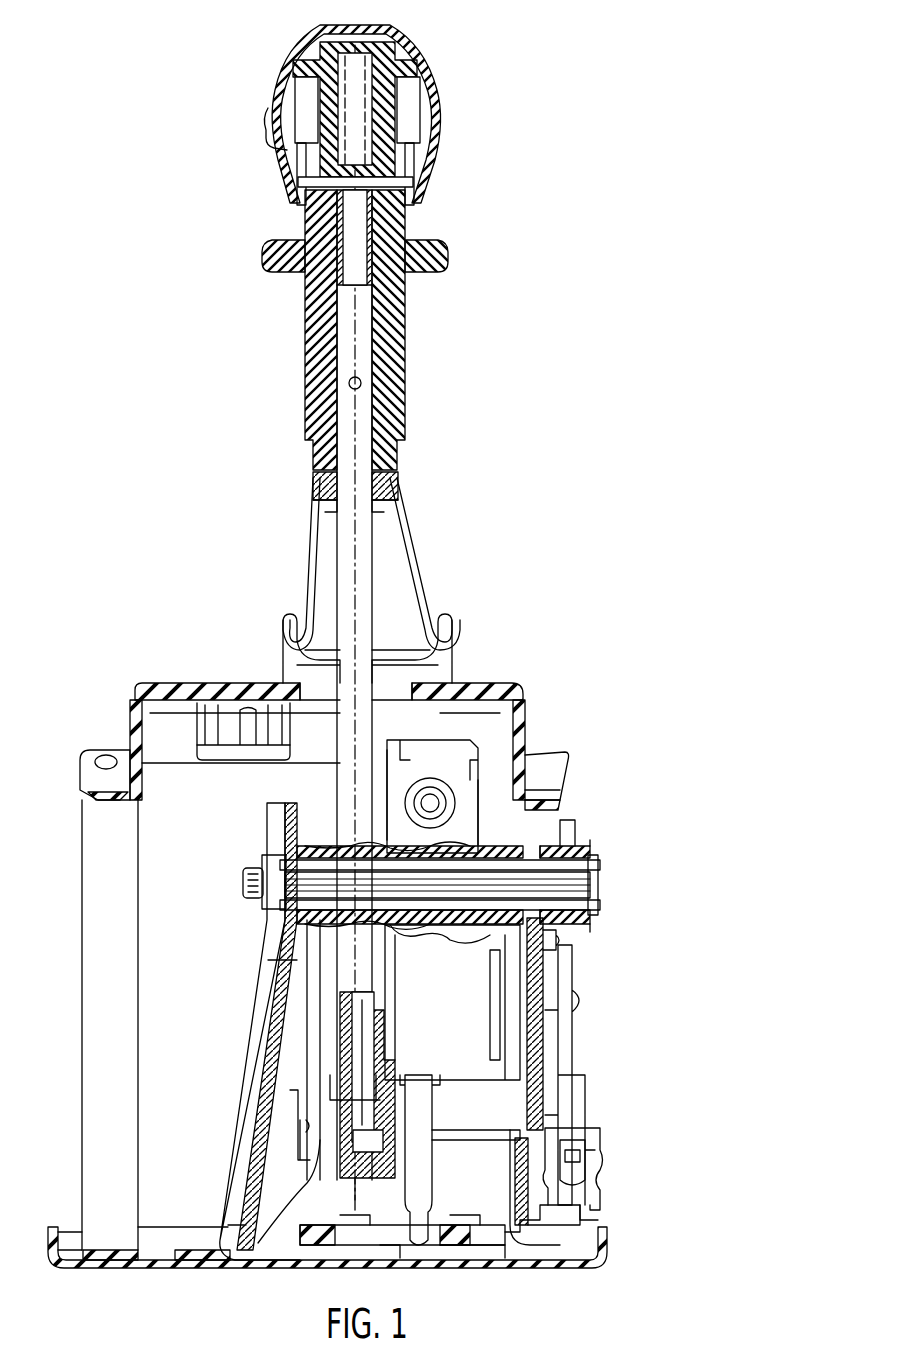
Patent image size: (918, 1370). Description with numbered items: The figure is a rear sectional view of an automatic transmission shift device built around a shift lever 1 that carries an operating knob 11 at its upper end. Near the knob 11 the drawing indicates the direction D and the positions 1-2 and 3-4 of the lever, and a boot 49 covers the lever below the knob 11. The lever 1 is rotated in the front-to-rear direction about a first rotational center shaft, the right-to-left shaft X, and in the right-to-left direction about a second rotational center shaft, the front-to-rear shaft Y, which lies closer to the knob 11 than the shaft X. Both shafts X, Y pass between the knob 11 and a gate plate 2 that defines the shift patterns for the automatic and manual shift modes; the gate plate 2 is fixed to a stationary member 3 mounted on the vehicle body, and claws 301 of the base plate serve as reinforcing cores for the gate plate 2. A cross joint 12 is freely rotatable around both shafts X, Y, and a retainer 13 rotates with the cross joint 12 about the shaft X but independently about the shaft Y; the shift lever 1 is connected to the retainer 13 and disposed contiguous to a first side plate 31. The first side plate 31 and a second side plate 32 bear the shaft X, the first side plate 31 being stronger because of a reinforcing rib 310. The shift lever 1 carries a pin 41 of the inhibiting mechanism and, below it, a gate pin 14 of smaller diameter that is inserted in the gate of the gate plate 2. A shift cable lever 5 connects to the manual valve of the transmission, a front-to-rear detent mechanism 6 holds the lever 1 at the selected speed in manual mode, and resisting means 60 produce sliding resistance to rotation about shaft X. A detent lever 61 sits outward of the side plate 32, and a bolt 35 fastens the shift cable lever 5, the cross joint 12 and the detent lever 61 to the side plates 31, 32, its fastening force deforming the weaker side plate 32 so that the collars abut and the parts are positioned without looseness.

The shift lever 1 is at (390, 573).
The gate plate 2 is at (383, 1262).
The stationary member 3 is at (104, 1270).
The shift cable lever 5 is at (318, 835).
The front-to-rear detent mechanism 6 is at (612, 1148).
The operating knob 11 is at (436, 133).
The cross joint 12 is at (472, 824).
The retainer 13 is at (446, 1010).
The gate pin 14 is at (424, 1215).
The first side plate 31 is at (260, 1036).
The second side plate 32 is at (545, 1013).
The bolt 35 is at (600, 849).
The pin 41 is at (318, 1142).
The boot 49 is at (312, 584).
The resisting means 60 is at (592, 838).
The detent lever 61 is at (578, 955).
The claws 301 is at (430, 1268).
The reinforcing rib 310 is at (250, 1138).
The right-to-left shaft X is at (600, 888).
The front-to-rear shaft Y is at (450, 782).
The direction D is at (477, 112).
The position 1-2 is at (517, 72).
The position 3-4 is at (378, 10).